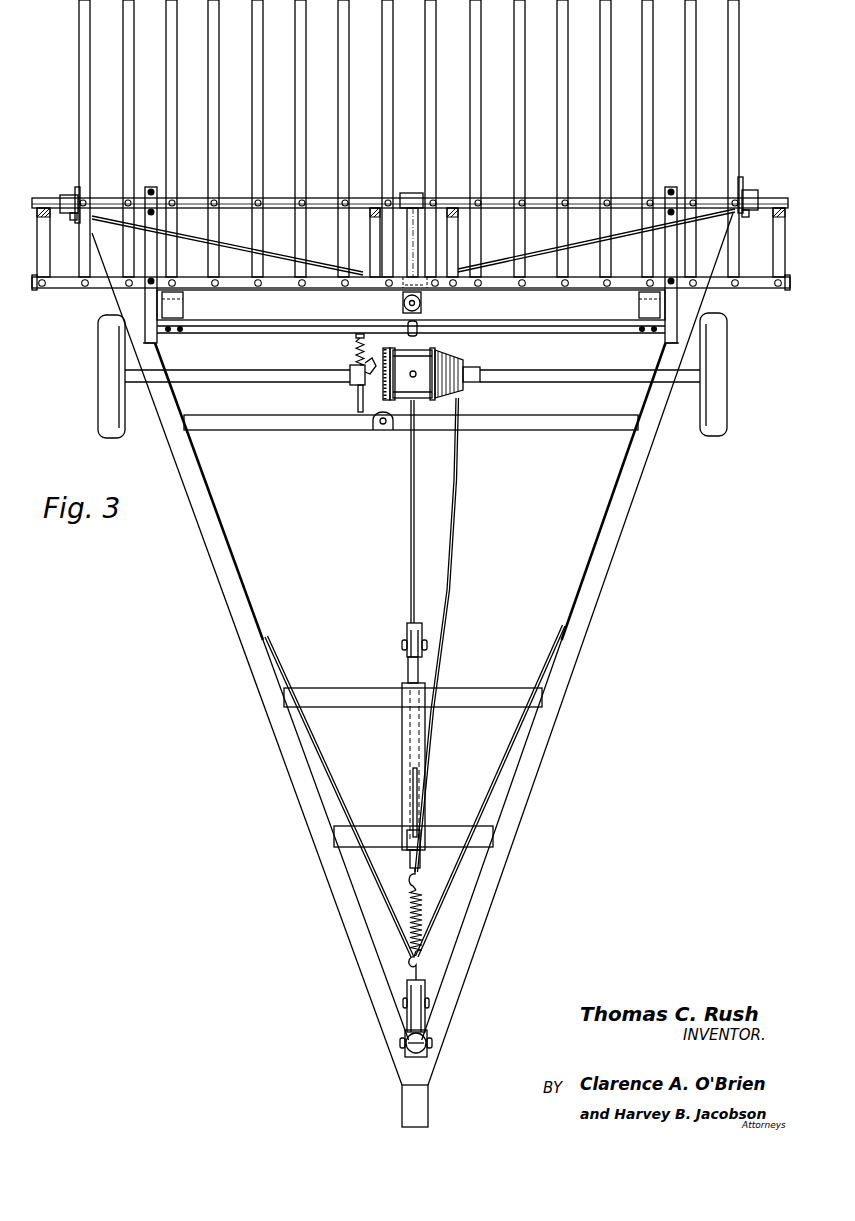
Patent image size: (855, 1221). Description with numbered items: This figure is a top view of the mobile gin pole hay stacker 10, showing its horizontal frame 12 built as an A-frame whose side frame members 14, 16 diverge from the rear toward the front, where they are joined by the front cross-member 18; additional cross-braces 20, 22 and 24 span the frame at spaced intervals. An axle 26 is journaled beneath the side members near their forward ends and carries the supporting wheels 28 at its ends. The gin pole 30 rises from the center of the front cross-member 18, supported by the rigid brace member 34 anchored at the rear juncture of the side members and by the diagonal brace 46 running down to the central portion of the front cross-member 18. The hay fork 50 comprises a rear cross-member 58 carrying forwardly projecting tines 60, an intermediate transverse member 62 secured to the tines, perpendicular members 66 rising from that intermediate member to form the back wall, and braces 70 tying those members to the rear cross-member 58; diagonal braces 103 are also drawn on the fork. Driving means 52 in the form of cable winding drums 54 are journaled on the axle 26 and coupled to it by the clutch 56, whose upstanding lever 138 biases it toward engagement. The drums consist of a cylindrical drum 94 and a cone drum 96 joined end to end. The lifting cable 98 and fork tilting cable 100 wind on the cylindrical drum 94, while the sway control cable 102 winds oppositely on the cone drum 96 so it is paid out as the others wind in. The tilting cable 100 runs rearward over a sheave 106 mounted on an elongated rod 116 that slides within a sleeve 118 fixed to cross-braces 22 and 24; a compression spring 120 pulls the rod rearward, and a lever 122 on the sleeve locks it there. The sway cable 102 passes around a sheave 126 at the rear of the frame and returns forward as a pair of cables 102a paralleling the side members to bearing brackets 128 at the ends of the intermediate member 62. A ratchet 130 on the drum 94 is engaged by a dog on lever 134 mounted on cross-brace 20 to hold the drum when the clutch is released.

The mobile gin pole hay stacker 10 is at (220, 577).
The horizontal frame 12 is at (575, 676).
The side frame member 14 is at (498, 884).
The side frame member 16 is at (343, 911).
The front cross-member 18 is at (579, 328).
The cross-brace 20 is at (530, 421).
The cross-brace 22 is at (472, 698).
The cross-brace 24 is at (457, 834).
The axle 26 is at (572, 374).
The supporting wheels 28 is at (107, 401).
The gin pole 30 is at (420, 302).
The rigid brace member 34 is at (397, 1053).
The diagonal brace 46 is at (416, 330).
The hay fork 50 is at (748, 62).
The driving means 52 is at (408, 437).
The cable winding drums 54 is at (676, 233).
The clutch 56 is at (355, 393).
The rear cross-member 58 is at (755, 280).
The tines 60 is at (697, 125).
The intermediate transverse member 62 is at (772, 193).
The perpendicular members 66 is at (452, 204).
The braces 70 is at (457, 247).
The cylindrical drum 94 is at (400, 362).
The cone drum 96 is at (465, 366).
The lifting cable 98 is at (399, 349).
The fork tilting cable 100 is at (409, 526).
The sway control cable 102 is at (457, 523).
The pair of cables 102a is at (269, 633).
The diagonal brace 103 is at (278, 252).
The sheave 106 is at (406, 627).
The elongated rod 116 is at (415, 676).
The sleeve 118 is at (402, 754).
The compression spring 120 is at (423, 910).
The lever 122 is at (412, 792).
The sheave 126 is at (419, 994).
The bearing brackets 128 is at (65, 196).
The ratchet 130 is at (383, 389).
The lever 134 is at (380, 416).
The upstanding lever 138 is at (358, 402).